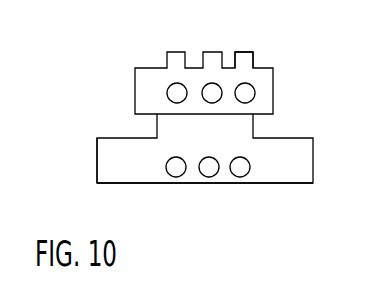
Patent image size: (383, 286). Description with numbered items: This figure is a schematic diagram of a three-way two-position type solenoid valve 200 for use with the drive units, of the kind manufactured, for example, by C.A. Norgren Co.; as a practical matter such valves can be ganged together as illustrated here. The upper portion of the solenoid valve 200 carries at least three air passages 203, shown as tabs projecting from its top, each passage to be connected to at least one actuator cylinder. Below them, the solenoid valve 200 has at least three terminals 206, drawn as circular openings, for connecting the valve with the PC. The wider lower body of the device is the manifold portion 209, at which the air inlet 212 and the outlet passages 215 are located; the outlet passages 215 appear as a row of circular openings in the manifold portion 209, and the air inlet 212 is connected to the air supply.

The solenoid valve 200 is at (127, 137).
The air passages 203 is at (242, 52).
The terminals 206 is at (255, 98).
The air inlet 212 is at (102, 165).
The outlet passages 215 is at (210, 172).
The manifold portion 209 is at (285, 185).